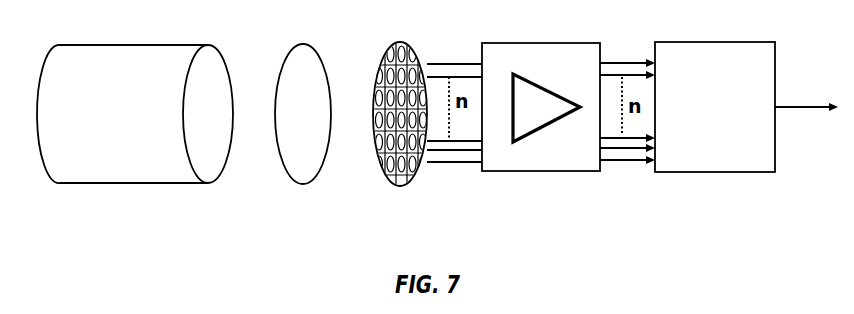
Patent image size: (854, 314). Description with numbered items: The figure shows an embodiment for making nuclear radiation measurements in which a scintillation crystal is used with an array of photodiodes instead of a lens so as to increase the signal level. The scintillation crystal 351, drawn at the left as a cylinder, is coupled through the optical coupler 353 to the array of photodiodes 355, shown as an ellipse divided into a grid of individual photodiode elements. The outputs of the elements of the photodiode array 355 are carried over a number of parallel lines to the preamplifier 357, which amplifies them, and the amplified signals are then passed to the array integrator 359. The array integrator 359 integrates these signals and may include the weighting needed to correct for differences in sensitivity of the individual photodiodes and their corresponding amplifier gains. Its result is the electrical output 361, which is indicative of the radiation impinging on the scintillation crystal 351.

The scintillation crystal 351 is at (90, 173).
The optical coupler 353 is at (299, 172).
The array of photodiodes 355 is at (398, 188).
The preamplifier 357 is at (533, 163).
The array integrator 359 is at (720, 163).
The electrical output 361 is at (817, 110).